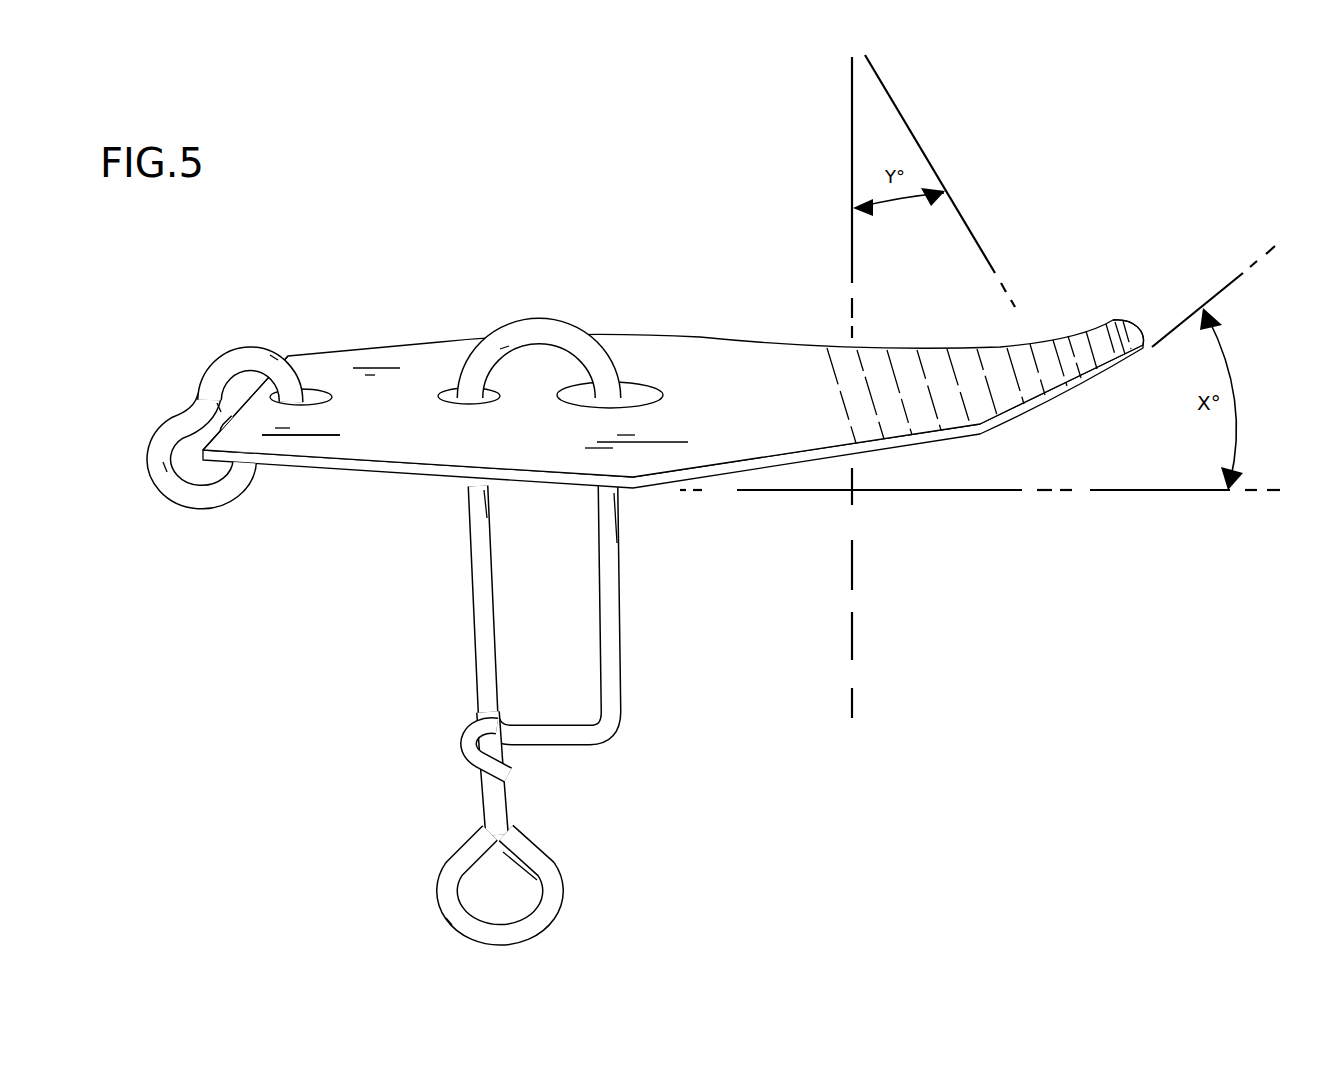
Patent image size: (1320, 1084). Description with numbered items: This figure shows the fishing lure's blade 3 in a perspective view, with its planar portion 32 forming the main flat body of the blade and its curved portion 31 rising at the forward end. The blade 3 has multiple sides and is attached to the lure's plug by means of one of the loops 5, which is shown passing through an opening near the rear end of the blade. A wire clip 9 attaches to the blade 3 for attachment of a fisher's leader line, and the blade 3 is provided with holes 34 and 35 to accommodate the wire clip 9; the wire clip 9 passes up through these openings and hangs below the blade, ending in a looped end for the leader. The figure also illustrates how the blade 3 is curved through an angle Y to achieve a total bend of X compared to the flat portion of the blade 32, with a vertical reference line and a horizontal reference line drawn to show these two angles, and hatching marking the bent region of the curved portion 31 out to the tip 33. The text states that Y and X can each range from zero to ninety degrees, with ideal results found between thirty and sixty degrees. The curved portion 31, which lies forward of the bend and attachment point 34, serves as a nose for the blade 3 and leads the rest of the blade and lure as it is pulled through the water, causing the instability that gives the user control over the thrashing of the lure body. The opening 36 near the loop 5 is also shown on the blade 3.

The blade 3 is at (788, 373).
The loop 5 is at (288, 356).
The wire clip 9 is at (623, 647).
The curved portion 31 is at (908, 360).
The planar portion 32 is at (408, 423).
The tip 33 is at (1113, 318).
The hole 34 is at (640, 385).
The hole 35 is at (457, 345).
The hole 36 is at (335, 396).